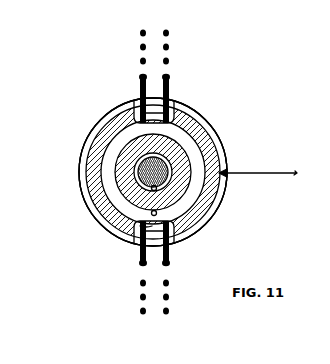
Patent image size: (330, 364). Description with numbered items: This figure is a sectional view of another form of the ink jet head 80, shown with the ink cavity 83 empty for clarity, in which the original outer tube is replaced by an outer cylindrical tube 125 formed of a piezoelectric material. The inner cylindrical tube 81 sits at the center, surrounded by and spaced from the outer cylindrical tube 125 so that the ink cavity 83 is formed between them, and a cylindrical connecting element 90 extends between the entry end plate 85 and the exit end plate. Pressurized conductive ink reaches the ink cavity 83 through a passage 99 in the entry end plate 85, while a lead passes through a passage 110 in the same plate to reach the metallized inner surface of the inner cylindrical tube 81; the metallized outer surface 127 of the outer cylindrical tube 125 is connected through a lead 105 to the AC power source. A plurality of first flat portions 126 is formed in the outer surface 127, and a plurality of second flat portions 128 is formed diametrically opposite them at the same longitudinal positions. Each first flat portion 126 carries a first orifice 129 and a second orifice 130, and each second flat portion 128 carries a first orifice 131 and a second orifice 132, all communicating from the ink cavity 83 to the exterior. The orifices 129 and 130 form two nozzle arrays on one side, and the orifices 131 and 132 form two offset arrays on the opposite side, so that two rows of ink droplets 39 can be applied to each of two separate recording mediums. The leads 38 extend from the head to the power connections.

The lead pins 38 is at (170, 80).
The ink droplets 39 is at (170, 47).
The ink jet head 80 is at (215, 88).
The inner cylindrical tube 81 is at (192, 154).
The ink cavity 83 is at (192, 128).
The entry end plate 85 is at (80, 201).
The cylindrical connecting element 90 is at (134, 174).
The passage 99 is at (151, 214).
The lead 105 is at (265, 173).
The passage 110 is at (157, 189).
The outer cylindrical tube 125 is at (100, 115).
The first flat portions 126 is at (133, 102).
The outer surface 127 is at (87, 138).
The second flat portions 128 is at (135, 231).
The first orifice 129 is at (180, 108).
The second orifice 130 is at (127, 110).
The first orifice 131 is at (205, 225).
The second orifice 132 is at (134, 225).